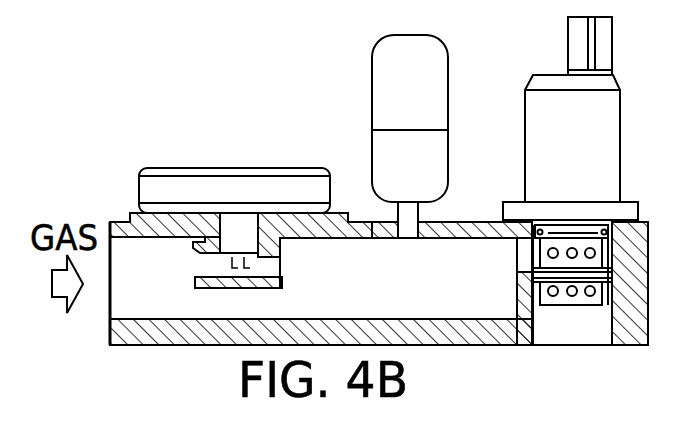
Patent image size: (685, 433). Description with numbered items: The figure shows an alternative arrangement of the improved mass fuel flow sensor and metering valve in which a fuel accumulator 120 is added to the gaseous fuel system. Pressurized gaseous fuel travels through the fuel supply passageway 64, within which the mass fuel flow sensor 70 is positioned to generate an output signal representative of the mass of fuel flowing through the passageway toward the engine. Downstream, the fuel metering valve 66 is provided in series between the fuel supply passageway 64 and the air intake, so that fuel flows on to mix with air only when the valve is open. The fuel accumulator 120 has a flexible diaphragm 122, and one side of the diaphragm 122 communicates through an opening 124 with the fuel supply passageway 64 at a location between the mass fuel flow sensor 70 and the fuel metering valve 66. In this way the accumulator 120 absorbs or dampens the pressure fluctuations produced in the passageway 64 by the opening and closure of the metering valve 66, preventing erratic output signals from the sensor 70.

The fuel supply passageway 64 is at (462, 295).
The mass fuel flow sensor 70 is at (238, 168).
The fuel accumulator 120 is at (372, 104).
The flexible diaphragm 122 is at (405, 131).
The opening 124 is at (410, 210).
The fuel metering valve 66 is at (607, 113).